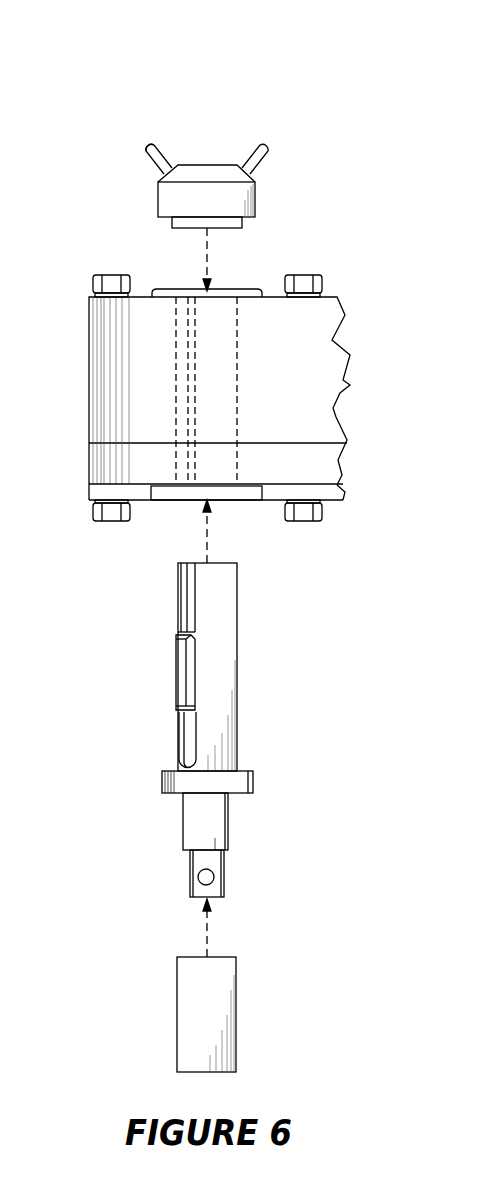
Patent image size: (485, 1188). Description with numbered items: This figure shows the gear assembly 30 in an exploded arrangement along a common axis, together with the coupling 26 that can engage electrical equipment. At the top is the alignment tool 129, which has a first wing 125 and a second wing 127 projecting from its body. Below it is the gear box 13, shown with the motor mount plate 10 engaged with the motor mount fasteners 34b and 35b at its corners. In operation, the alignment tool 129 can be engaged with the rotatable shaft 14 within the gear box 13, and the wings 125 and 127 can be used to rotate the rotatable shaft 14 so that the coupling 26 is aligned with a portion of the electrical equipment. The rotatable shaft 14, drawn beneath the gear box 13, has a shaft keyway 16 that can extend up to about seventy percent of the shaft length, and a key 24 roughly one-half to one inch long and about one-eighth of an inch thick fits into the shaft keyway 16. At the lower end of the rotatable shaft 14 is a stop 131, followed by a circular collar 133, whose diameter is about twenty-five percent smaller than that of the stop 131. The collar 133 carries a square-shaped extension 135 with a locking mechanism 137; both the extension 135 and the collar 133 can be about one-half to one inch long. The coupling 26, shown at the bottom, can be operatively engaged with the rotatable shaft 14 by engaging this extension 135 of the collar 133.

The gear assembly 30 is at (207, 152).
The first wing 125 is at (157, 167).
The second wing 127 is at (260, 166).
The alignment tool 129 is at (170, 197).
The gear box 13 is at (113, 389).
The motor mount plate 10 is at (95, 490).
The motor mount fastener 34b is at (98, 508).
The motor mount fastener 35b is at (317, 508).
The rotatable shaft 14 is at (210, 669).
The key 24 is at (180, 672).
The shaft keyway 16 is at (190, 732).
The stop 131 is at (232, 780).
The collar 133 is at (195, 828).
The extension 135 is at (195, 888).
The locking mechanism 137 is at (208, 877).
The coupling 26 is at (190, 1002).